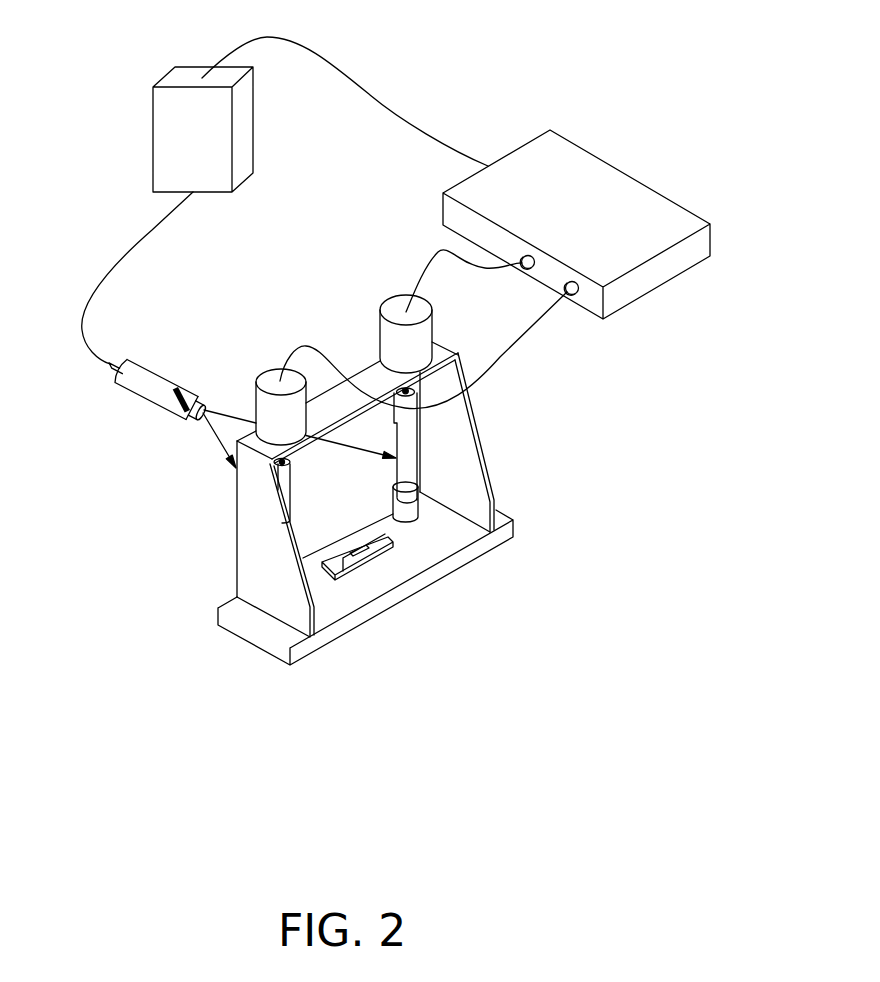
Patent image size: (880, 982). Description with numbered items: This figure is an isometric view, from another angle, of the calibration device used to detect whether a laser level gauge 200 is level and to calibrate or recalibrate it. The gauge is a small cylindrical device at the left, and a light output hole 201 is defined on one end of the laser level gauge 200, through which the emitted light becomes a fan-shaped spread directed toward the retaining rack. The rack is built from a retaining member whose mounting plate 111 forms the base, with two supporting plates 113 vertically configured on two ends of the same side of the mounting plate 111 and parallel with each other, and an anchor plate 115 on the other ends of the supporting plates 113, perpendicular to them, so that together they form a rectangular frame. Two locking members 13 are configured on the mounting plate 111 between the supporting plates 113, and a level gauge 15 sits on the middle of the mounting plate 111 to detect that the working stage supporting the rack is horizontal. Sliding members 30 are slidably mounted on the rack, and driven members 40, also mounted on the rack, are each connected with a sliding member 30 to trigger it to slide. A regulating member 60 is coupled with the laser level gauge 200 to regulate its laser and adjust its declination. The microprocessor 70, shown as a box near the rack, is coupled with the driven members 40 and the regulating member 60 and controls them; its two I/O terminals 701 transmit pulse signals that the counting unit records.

The regulating member 60 is at (177, 134).
The microprocessor 70 is at (617, 187).
The I/O terminals 701 is at (527, 270).
The driven members 40 is at (388, 338).
The sliding members 30 is at (415, 448).
The locking members 13 is at (416, 512).
The level gauge 15 is at (333, 572).
The mounting plate 111 is at (402, 568).
The supporting plates 113 is at (311, 489).
The anchor plate 115 is at (237, 442).
The laser level gauge 200 is at (138, 382).
The light output hole 201 is at (205, 411).